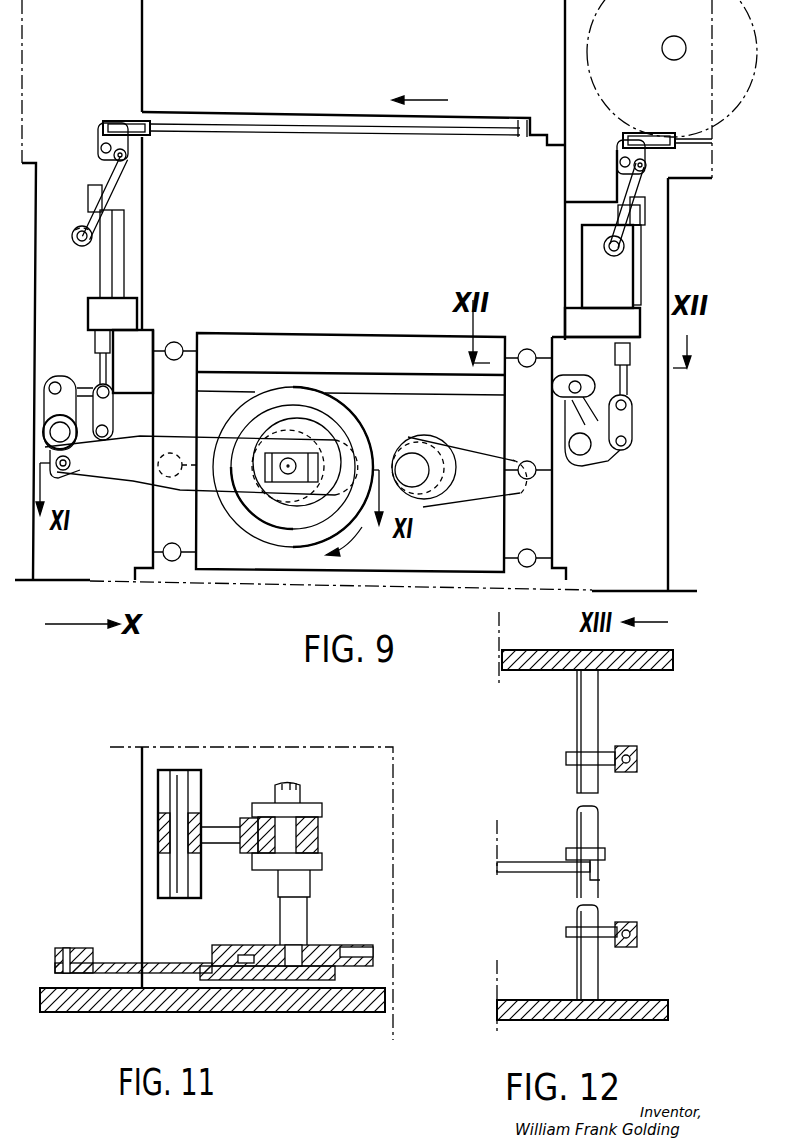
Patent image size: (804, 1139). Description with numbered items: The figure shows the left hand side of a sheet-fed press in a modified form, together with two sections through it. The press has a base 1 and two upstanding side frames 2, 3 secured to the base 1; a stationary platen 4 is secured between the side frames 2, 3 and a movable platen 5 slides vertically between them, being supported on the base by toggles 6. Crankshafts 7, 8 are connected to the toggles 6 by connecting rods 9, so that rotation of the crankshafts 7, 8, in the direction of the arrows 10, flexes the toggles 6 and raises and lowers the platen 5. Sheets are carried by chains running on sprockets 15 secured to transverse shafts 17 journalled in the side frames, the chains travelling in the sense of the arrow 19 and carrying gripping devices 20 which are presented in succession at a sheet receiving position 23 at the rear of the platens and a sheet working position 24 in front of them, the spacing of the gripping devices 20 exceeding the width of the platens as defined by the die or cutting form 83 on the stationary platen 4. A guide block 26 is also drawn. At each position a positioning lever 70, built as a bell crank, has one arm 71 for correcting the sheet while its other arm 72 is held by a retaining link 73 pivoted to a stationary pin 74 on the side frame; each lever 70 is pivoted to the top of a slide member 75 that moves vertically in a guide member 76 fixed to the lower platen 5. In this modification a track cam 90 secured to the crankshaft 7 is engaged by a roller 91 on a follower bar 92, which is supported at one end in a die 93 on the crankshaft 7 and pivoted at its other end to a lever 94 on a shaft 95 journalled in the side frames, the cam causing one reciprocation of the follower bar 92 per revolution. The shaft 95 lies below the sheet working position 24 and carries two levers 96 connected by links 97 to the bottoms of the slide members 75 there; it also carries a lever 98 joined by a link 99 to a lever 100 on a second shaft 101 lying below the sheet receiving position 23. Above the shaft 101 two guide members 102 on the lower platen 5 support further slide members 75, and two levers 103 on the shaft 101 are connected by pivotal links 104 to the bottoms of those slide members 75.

In FIG. 9, the base 1 is at (432, 570).
In FIG. 11, the base 1 is at (142, 784).
In FIG. 9, the side frame 2 is at (660, 528).
In FIG. 12, the side frame 2 is at (640, 670).
In FIG. 12, the side frame 3 is at (650, 1000).
In FIG. 9, the stationary platen 4 is at (305, 55).
In FIG. 9, the movable platen 5 is at (320, 193).
In FIG. 9, the toggles 6 is at (155, 530).
In FIG. 11, the toggles 6 is at (201, 795).
In FIG. 9, the crankshaft 7 is at (290, 461).
In FIG. 11, the crankshaft 7 is at (305, 797).
In FIG. 9, the crankshaft 8 is at (425, 455).
In FIG. 9, the connecting rods 9 is at (200, 493).
In FIG. 11, the connecting rods 9 is at (225, 843).
In FIG. 9, the arrows 10 is at (350, 546).
In FIG. 9, the sprocket 15 is at (598, 99).
In FIG. 12, the sprocket 15 is at (637, 759).
In FIG. 9, the transverse shaft 17 is at (662, 52).
In FIG. 9, the arrow 19 is at (423, 100).
In FIG. 9, the gripping devices 20 is at (127, 121).
In FIG. 9, the sheet receiving position 23 is at (672, 133).
In FIG. 9, the sheet working position 24 is at (107, 121).
In FIG. 9, the guide block 26 is at (524, 121).
In FIG. 9, the positioning lever 70 is at (98, 138).
In FIG. 9, the arm 71 is at (100, 125).
In FIG. 9, the arm 72 is at (112, 158).
In FIG. 9, the retaining link 73 is at (88, 192).
In FIG. 9, the stationary pin 74 is at (75, 252).
In FIG. 9, the slide member 75 is at (100, 278).
In FIG. 12, the slide member 75 is at (637, 934).
In FIG. 9, the guide member 76 is at (108, 313).
In FIG. 9, the die or cutting form 83 is at (232, 124).
In FIG. 9, the track cam 90 is at (338, 427).
In FIG. 11, the track cam 90 is at (345, 945).
In FIG. 11, the roller 91 is at (246, 954).
In FIG. 9, the follower bar 92 is at (125, 481).
In FIG. 11, the follower bar 92 is at (120, 963).
In FIG. 9, the die 93 is at (275, 482).
In FIG. 11, the die 93 is at (310, 980).
In FIG. 9, the lever 94 is at (72, 465).
In FIG. 11, the lever 94 is at (76, 948).
In FIG. 9, the shaft 95 is at (102, 427).
In FIG. 9, the levers 96 is at (83, 383).
In FIG. 9, the links 97 is at (126, 392).
In FIG. 9, the lever 98 is at (53, 372).
In FIG. 9, the link 99 is at (232, 374).
In FIG. 12, the link 99 is at (505, 862).
In FIG. 9, the lever 100 is at (583, 405).
In FIG. 12, the lever 100 is at (575, 848).
In FIG. 9, the shaft 101 is at (580, 455).
In FIG. 12, the shaft 101 is at (577, 712).
In FIG. 9, the guide members 102 is at (606, 309).
In FIG. 9, the levers 103 is at (605, 458).
In FIG. 12, the levers 103 is at (598, 755).
In FIG. 9, the pivotal links 104 is at (632, 428).
In FIG. 12, the pivotal links 104 is at (626, 772).